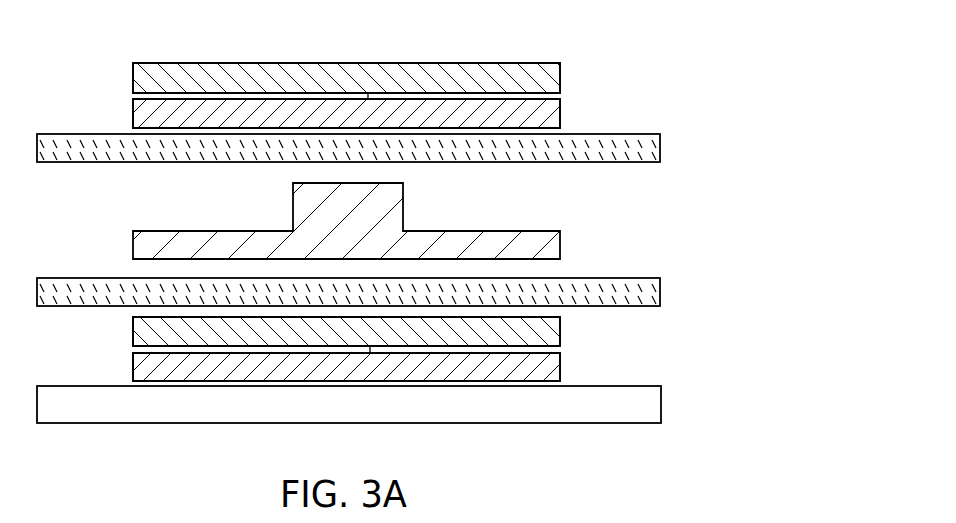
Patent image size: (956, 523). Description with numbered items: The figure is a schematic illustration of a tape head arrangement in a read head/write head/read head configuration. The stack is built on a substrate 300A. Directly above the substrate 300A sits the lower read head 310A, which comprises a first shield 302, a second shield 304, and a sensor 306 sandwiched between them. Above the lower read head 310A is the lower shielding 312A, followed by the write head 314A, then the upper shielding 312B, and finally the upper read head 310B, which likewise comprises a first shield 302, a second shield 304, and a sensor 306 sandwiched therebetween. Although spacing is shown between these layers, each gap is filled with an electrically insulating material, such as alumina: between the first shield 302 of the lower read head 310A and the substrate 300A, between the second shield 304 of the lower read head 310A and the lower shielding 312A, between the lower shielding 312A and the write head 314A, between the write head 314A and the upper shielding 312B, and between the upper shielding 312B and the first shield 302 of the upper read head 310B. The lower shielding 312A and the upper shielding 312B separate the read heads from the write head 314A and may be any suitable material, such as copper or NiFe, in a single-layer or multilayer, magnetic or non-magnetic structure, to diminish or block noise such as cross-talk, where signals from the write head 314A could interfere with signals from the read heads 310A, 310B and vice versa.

The substrate 300A is at (485, 418).
The first shield 302 is at (133, 112).
The second shield 304 is at (133, 76).
The sensor 306 is at (355, 96).
The lower read head 310A is at (565, 317).
The upper read head 310B is at (566, 63).
The lower shielding 312A is at (660, 292).
The upper shielding 312B is at (660, 146).
The write head 314A is at (560, 242).